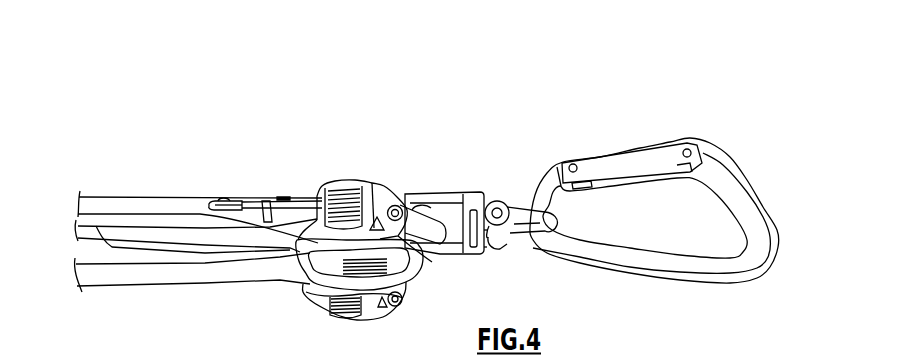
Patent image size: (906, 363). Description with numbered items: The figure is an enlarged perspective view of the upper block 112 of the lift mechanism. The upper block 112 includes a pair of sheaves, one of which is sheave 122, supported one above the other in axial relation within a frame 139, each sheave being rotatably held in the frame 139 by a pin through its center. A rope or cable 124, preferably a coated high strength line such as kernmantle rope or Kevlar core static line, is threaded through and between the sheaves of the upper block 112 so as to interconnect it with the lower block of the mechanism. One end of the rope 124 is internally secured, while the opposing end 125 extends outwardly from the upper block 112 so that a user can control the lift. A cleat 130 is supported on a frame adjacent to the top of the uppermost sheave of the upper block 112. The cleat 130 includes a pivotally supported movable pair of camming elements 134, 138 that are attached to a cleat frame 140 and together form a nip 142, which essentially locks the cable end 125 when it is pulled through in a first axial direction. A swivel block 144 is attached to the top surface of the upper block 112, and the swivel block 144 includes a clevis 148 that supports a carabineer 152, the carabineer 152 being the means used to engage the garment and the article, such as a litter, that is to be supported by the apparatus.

The upper block 112 is at (352, 120).
The sheave 122 is at (270, 203).
The rope or cable 124 is at (96, 198).
The opposing end of the rope 125 is at (128, 278).
The cleat 130 is at (307, 291).
The camming element 134 is at (337, 186).
The camming element 138 is at (365, 314).
The frame 139 is at (468, 192).
The cleat frame 140 is at (415, 247).
The nip 142 is at (410, 279).
The swivel block 144 is at (513, 250).
The clevis 148 is at (512, 205).
The carabineer 152 is at (682, 281).